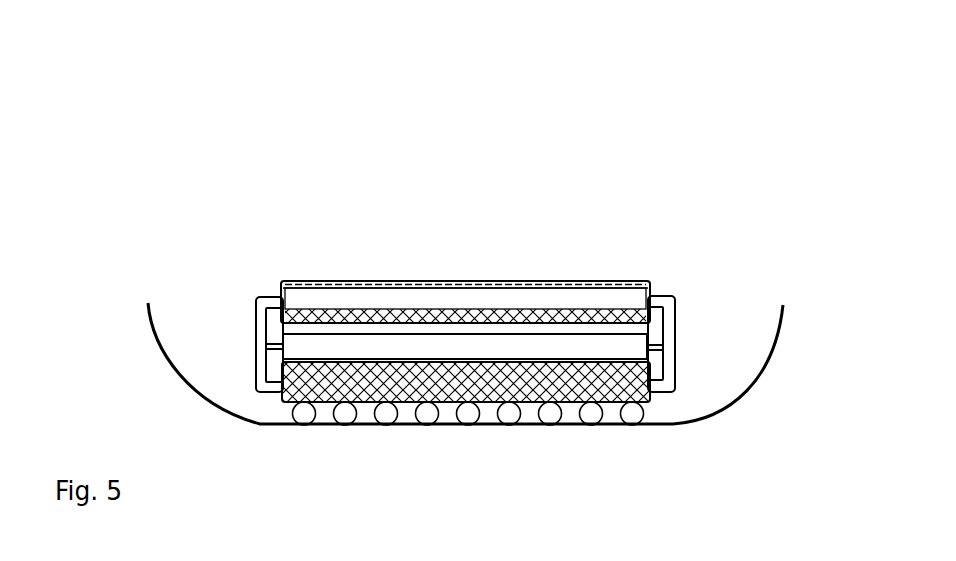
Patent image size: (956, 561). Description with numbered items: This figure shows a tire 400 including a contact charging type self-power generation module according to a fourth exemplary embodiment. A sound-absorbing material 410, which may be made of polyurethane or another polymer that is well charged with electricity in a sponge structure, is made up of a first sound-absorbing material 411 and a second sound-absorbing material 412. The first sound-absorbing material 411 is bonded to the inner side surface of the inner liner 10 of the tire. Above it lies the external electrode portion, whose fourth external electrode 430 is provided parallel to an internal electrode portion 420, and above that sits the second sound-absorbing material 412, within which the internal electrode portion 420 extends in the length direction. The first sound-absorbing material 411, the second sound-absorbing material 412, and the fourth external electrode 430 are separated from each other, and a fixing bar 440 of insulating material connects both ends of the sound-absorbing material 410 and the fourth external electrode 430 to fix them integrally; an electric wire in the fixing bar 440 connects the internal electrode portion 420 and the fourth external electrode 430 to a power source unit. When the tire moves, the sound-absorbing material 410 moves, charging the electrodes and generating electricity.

The inner liner 10 is at (763, 373).
The tire 400 is at (703, 133).
The sound-absorbing material 410 is at (263, 153).
The first sound-absorbing material 411 is at (287, 383).
The second sound-absorbing material 412 is at (283, 301).
The internal electrode portion 420 is at (412, 300).
The fourth external electrode 430 is at (512, 345).
The fixing bar 440 is at (268, 341).